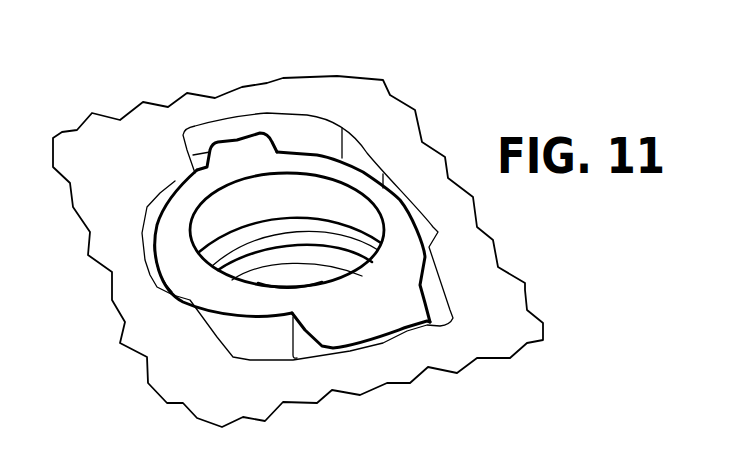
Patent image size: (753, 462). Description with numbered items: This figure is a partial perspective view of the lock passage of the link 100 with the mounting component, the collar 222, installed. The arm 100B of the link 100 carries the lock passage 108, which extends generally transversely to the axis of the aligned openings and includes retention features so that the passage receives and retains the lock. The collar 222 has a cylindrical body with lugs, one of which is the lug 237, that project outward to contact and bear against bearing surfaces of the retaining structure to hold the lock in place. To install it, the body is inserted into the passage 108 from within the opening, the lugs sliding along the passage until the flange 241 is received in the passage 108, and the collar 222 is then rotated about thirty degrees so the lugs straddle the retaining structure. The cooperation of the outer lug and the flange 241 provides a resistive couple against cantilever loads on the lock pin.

The link 100 is at (303, 181).
The arm 100B is at (465, 254).
The lock passage 108 is at (308, 112).
The collar 222 is at (152, 199).
The lug 237 is at (237, 145).
The flange 241 is at (403, 308).